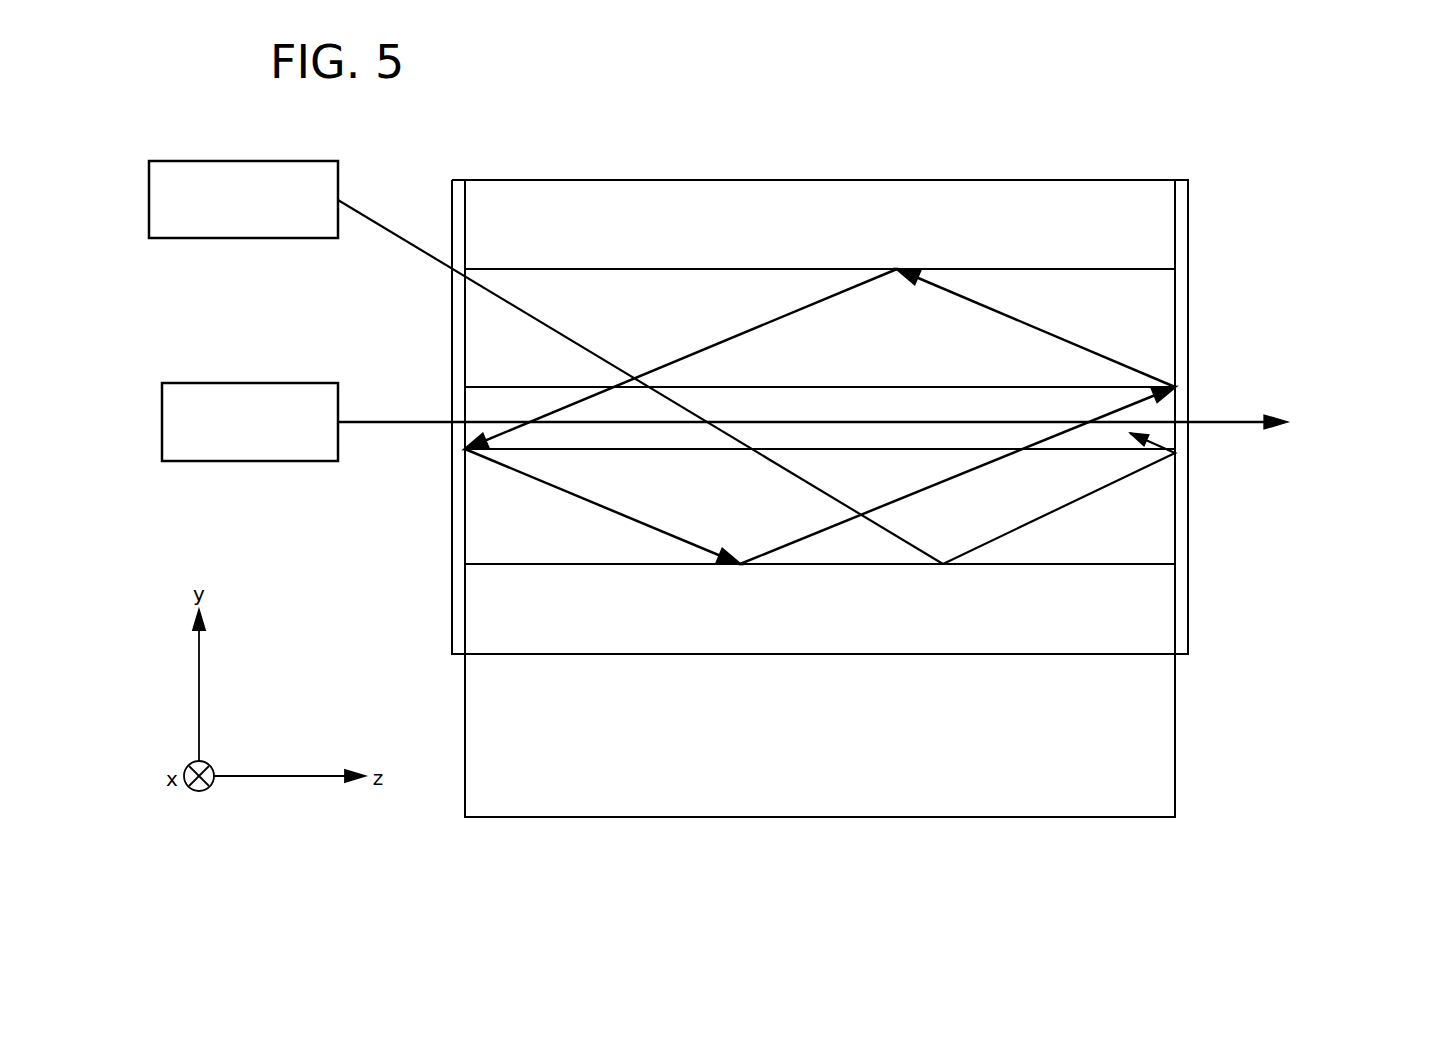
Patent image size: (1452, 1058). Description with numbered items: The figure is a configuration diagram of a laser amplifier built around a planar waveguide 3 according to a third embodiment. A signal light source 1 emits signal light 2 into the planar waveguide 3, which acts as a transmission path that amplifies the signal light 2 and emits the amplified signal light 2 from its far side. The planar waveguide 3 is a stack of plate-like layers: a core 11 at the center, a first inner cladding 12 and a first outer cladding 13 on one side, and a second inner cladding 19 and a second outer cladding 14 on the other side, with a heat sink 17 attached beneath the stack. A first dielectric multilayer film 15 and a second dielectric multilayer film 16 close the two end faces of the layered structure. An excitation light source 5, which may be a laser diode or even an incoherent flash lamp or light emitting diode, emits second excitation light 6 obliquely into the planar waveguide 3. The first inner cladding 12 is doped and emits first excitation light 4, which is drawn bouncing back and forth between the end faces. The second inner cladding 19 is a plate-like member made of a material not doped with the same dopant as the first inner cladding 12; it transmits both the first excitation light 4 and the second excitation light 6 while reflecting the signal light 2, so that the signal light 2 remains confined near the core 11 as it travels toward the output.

The signal light source 1 is at (300, 383).
The signal light 2 is at (375, 420).
The planar waveguide 3 is at (823, 820).
The first excitation light 4 is at (545, 420).
The excitation light source 5 is at (297, 161).
The second excitation light 6 is at (400, 238).
The core 11 is at (1158, 405).
The first inner cladding 12 is at (1158, 306).
The first outer cladding 13 is at (1158, 224).
The second outer cladding 14 is at (1158, 608).
The first dielectric multilayer film 15 is at (452, 203).
The second dielectric multilayer film 16 is at (1183, 188).
The heat sink 17 is at (1158, 738).
The second inner cladding 19 is at (1158, 542).